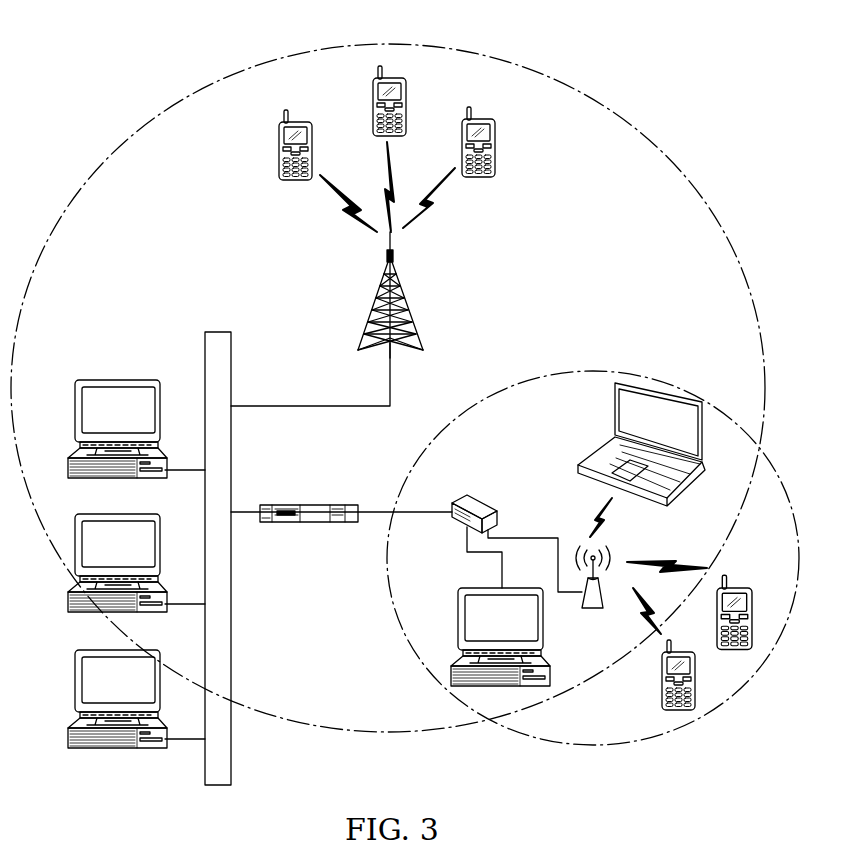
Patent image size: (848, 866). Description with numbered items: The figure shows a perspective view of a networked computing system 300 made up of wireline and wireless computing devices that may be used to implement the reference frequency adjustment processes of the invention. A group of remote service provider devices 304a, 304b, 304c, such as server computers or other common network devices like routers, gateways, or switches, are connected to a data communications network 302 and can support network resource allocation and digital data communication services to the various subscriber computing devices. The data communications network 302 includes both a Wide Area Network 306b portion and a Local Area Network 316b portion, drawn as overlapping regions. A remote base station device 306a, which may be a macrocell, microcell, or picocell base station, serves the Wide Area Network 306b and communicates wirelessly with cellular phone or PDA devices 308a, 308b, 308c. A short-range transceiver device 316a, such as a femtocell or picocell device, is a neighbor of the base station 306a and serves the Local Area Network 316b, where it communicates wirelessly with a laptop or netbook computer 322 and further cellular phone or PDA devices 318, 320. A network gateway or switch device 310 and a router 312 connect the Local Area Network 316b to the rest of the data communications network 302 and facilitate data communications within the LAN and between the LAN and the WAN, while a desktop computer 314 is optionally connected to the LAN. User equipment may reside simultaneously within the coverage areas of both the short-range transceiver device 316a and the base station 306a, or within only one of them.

The networked computing system 300 is at (160, 49).
The data communications network 302 is at (205, 366).
The remote service provider device 304a is at (105, 380).
The remote service provider device 304b is at (110, 514).
The remote service provider device 304c is at (97, 650).
The remote base station device 306a is at (405, 305).
The Wide Area Network 306b is at (681, 170).
The cellular phone or PDA device 308a is at (277, 145).
The cellular phone or PDA device 308b is at (372, 97).
The cellular phone or PDA device 308c is at (495, 152).
The network gateway or switch device 310 is at (314, 505).
The router 312 is at (486, 503).
The desktop computer 314 is at (474, 590).
The short-range transceiver device 316a is at (593, 612).
The Local Area Network 316b is at (546, 375).
The cellular phone or PDA device 318 is at (677, 711).
The cellular phone or PDA device 320 is at (735, 652).
The laptop or netbook computer 322 is at (596, 452).